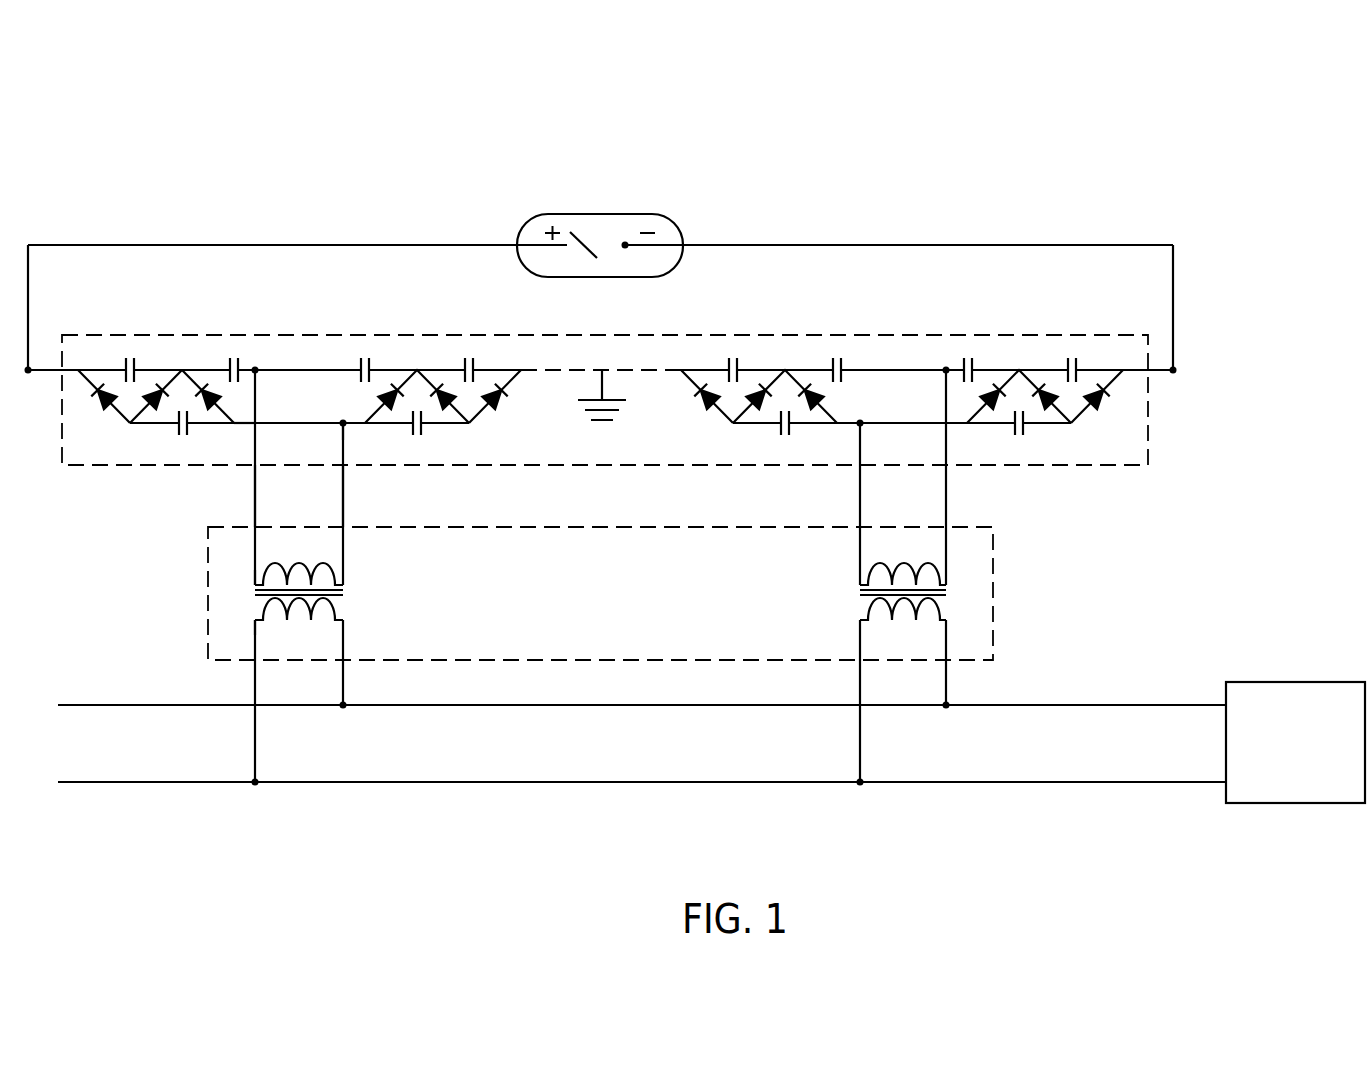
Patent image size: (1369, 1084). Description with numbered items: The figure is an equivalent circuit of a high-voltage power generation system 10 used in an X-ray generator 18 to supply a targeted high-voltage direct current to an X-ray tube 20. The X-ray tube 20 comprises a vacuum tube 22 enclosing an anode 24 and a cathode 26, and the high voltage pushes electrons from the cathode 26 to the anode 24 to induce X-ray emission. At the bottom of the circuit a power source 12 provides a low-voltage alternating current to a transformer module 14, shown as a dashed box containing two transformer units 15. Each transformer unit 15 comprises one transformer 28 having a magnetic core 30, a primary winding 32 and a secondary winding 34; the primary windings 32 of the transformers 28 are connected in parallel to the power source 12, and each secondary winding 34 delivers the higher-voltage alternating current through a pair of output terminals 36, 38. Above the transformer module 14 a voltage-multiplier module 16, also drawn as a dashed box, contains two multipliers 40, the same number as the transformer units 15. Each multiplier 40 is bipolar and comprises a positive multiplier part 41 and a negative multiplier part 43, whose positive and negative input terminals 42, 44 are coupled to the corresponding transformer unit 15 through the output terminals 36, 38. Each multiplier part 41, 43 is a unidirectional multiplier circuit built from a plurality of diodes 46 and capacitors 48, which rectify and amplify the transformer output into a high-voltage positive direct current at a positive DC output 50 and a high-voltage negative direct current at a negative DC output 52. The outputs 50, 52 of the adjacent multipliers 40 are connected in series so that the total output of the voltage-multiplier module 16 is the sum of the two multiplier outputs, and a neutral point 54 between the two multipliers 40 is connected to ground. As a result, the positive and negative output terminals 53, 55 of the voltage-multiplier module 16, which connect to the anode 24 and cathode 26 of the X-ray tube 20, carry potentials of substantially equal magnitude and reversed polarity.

The high-voltage power generation system 10 is at (178, 625).
The power source 12 is at (1295, 682).
The transformer module 14 is at (993, 590).
The transformer unit 15 is at (580, 586).
The voltage-multiplier module 16 is at (1148, 428).
The X-ray generator 18 is at (1240, 108).
The X-ray tube 20 is at (598, 213).
The vacuum tube 22 is at (548, 213).
The anode 24 is at (590, 257).
The cathode 26 is at (625, 249).
The transformer 28 is at (256, 583).
The magnetic core 30 is at (262, 600).
The primary winding 32 is at (325, 612).
The secondary winding 34 is at (310, 568).
The output terminal 36 is at (255, 492).
The output terminal 38 is at (343, 503).
The multiplier 40 is at (256, 369).
The positive multiplier part 41 is at (207, 370).
The positive input terminal 42 is at (255, 433).
The negative multiplier part 43 is at (417, 370).
The negative input terminal 44 is at (343, 444).
The diode 46 is at (160, 390).
The capacitor 48 is at (177, 430).
The positive DC output 50 is at (45, 370).
The negative DC output 52 is at (521, 370).
The positive output terminal 53 is at (28, 283).
The neutral point 54 is at (597, 422).
The negative output terminal 55 is at (1173, 297).